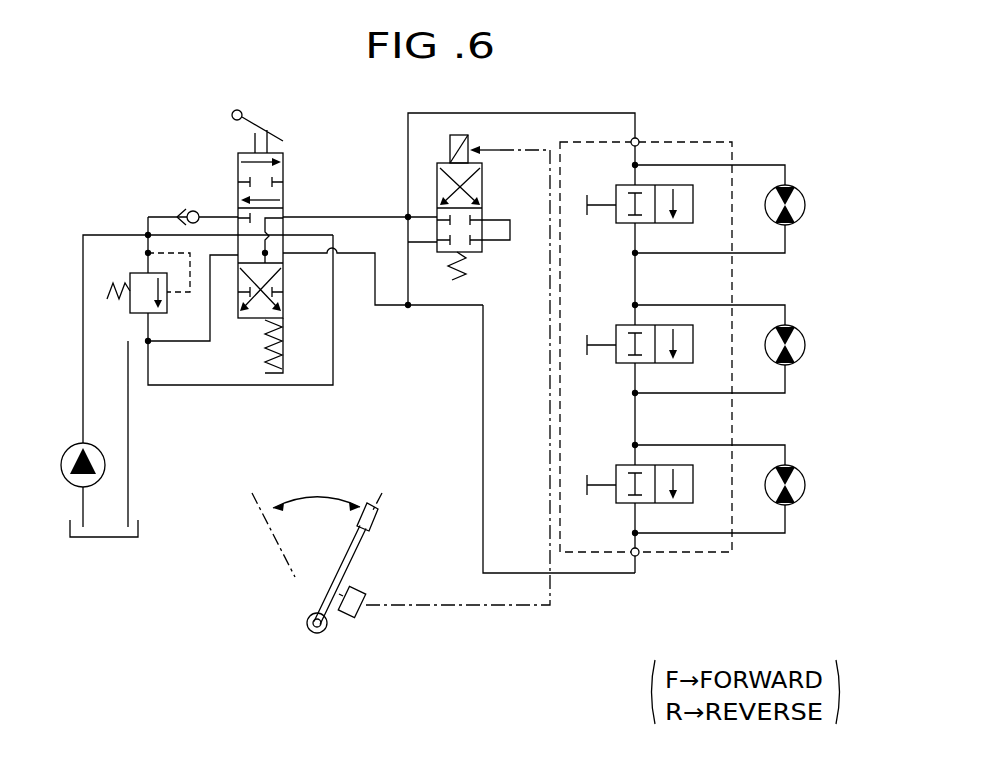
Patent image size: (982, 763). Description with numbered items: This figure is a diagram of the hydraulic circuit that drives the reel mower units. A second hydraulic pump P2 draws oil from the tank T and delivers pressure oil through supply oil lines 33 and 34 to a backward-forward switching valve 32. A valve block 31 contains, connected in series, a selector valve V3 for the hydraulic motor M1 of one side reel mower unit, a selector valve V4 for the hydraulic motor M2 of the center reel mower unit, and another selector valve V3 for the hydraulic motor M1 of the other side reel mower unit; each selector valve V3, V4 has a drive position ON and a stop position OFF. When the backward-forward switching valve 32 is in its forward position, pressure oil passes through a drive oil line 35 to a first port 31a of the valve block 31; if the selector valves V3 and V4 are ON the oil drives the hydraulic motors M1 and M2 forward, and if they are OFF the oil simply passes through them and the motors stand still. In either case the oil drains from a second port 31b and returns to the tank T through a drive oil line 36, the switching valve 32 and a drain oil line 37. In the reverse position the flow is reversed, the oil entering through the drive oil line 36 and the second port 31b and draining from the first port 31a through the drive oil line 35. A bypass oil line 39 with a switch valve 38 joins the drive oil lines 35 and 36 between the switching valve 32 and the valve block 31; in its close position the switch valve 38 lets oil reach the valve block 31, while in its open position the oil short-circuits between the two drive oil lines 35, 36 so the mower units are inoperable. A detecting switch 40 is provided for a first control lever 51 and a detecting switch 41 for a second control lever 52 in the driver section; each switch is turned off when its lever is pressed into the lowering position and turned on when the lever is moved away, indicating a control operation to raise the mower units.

The valve block 31 is at (700, 553).
The first port 31a is at (639, 142).
The second port 31b is at (638, 556).
The backward-forward switching valve 32 is at (238, 185).
The supply oil line 33 is at (112, 235).
The supply oil line 34 is at (165, 215).
The drive oil line 35 is at (408, 145).
The drive oil line 36 is at (483, 380).
The drain oil line 37 is at (128, 418).
The switch valve 38 is at (437, 190).
The bypass oil line 39 is at (408, 282).
The detecting switch 40 is at (406, 619).
The detecting switch 41 is at (357, 617).
The first control lever 51 is at (352, 549).
The second control lever 52 is at (360, 555).
The second hydraulic pump P2 is at (105, 465).
The tank T is at (138, 530).
The hydraulic motor M1 is at (795, 190).
The hydraulic motor M2 is at (795, 330).
The selector valve V3 is at (616, 190).
The selector valve V4 is at (616, 330).